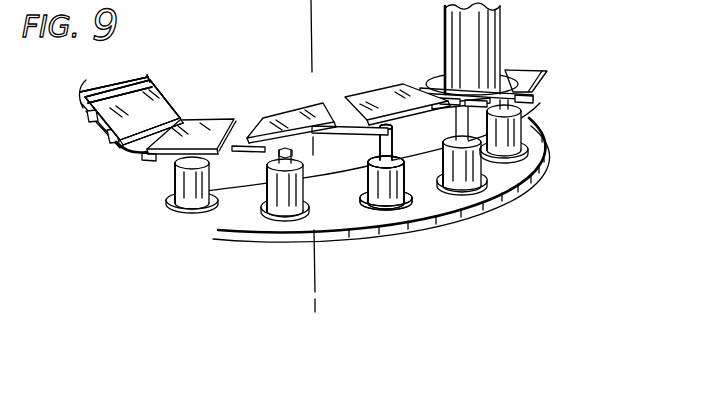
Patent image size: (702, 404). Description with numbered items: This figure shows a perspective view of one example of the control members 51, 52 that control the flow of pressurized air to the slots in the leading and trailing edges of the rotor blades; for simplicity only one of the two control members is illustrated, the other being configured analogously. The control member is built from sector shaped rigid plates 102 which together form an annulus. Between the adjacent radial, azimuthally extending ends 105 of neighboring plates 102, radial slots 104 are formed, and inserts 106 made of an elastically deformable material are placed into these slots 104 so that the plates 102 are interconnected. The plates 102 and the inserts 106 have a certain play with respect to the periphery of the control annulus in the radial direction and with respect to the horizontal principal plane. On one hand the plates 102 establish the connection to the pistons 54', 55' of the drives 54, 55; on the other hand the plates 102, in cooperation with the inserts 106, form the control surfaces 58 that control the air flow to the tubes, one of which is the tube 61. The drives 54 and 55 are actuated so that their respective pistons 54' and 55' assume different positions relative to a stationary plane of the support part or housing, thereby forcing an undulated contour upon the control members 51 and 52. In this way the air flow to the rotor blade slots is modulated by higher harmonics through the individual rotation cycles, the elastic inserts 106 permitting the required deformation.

The control member 51 is at (134, 72).
The control member 52 is at (134, 72).
The control surface 58 is at (188, 131).
The insert 106 is at (248, 120).
The azimuthally extending end 105 is at (345, 108).
The tube 61 is at (498, 44).
The sector shaped rigid plate 102 is at (103, 130).
The radial slot 104 is at (150, 162).
The drive 54 is at (410, 208).
The drive 55 is at (410, 223).
The piston 54' is at (477, 187).
The piston 55' is at (477, 187).